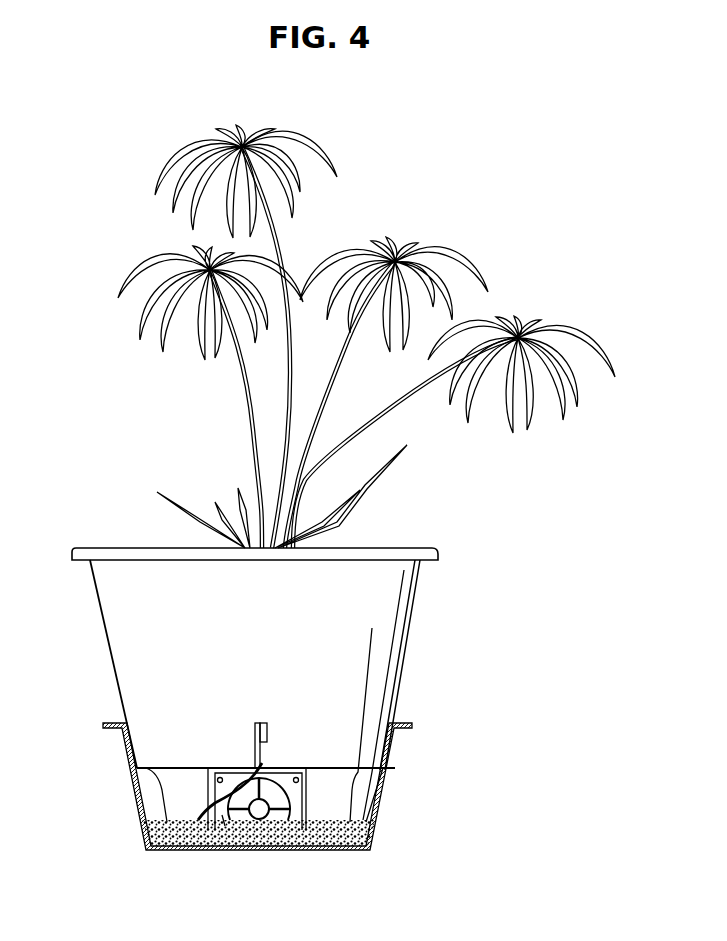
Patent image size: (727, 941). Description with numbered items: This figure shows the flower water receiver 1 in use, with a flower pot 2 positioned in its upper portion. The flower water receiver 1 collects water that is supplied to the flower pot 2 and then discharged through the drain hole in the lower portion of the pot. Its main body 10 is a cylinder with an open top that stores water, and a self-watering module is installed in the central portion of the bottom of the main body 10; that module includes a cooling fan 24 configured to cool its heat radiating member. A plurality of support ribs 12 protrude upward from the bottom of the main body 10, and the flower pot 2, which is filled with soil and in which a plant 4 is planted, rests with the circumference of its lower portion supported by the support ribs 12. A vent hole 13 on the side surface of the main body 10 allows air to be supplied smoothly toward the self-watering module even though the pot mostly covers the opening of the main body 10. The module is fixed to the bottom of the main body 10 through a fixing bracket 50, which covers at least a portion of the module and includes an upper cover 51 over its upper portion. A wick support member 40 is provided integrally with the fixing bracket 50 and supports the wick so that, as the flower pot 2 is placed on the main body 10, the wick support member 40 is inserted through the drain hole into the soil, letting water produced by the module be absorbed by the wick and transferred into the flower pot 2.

The flower water receiver 1 is at (113, 756).
The flower pot 2 is at (415, 601).
The plant 4 is at (390, 405).
The main body 10 is at (395, 768).
The support ribs 12 is at (347, 847).
The vent hole 13 is at (362, 812).
The cooling fan 24 is at (224, 840).
The wick support member 40 is at (255, 734).
The fixing bracket 50 is at (310, 790).
The upper cover 51 is at (290, 767).